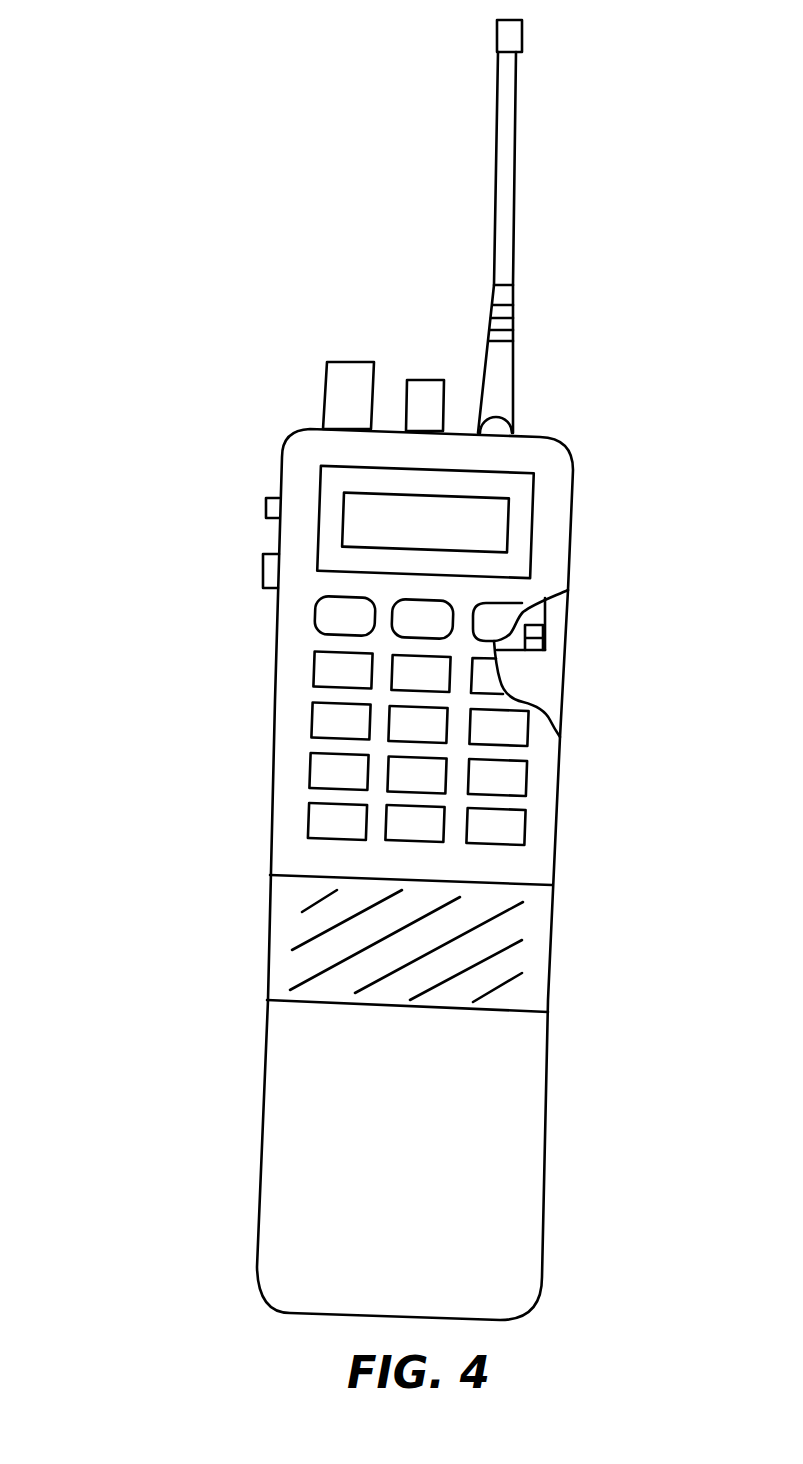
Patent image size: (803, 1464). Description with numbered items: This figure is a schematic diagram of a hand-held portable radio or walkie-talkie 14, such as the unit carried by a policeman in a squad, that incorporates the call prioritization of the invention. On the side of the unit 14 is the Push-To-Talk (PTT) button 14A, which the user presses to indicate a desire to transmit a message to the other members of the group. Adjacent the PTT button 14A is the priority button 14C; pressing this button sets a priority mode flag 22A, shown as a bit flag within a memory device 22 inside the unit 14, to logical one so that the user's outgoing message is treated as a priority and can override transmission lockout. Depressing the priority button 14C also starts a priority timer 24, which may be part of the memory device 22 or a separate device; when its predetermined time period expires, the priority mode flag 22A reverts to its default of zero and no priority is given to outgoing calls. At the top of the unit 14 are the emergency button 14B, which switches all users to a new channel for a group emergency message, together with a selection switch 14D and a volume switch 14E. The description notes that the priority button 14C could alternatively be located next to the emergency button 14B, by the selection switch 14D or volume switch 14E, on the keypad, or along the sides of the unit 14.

The hand-held portable radio 14 is at (100, 835).
The Push-To-Talk button 14A is at (263, 570).
The emergency button 14B is at (503, 417).
The priority button 14C is at (266, 508).
The selection switch 14D is at (348, 362).
The volume switch 14E is at (425, 380).
The memory device 22 is at (540, 612).
The priority mode flag 22A is at (535, 630).
The priority timer 24 is at (540, 651).